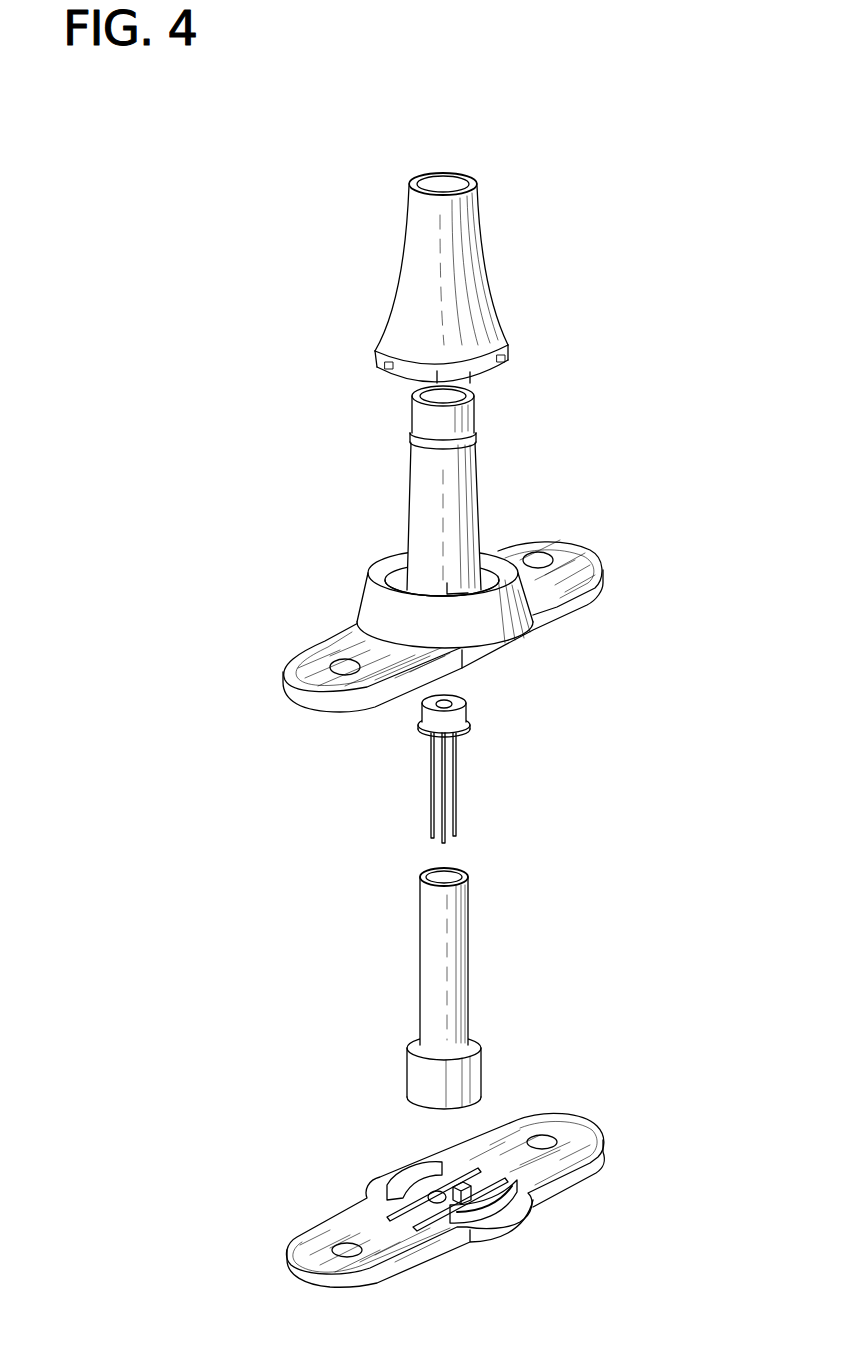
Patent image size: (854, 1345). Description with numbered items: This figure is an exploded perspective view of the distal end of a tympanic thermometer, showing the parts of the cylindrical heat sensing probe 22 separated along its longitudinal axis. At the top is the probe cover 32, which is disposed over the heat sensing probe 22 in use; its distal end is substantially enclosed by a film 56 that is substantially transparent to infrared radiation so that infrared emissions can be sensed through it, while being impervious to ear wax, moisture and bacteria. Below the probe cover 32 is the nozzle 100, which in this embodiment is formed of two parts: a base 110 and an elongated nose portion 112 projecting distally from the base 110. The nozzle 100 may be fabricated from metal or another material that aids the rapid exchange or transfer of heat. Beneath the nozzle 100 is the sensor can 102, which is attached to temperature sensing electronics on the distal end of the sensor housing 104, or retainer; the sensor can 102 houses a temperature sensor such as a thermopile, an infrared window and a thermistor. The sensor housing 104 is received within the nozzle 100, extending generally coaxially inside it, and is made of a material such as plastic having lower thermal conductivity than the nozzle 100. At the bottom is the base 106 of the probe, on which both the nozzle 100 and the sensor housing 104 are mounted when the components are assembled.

The heat sensing probe 22 is at (190, 543).
The probe cover 32 is at (423, 273).
The film 56 is at (445, 178).
The nozzle 100 is at (405, 510).
The sensor can 102 is at (475, 708).
The sensor housing 104 is at (467, 1008).
The base 106 is at (590, 1130).
The base 110 is at (285, 682).
The elongated nose portion 112 is at (480, 413).